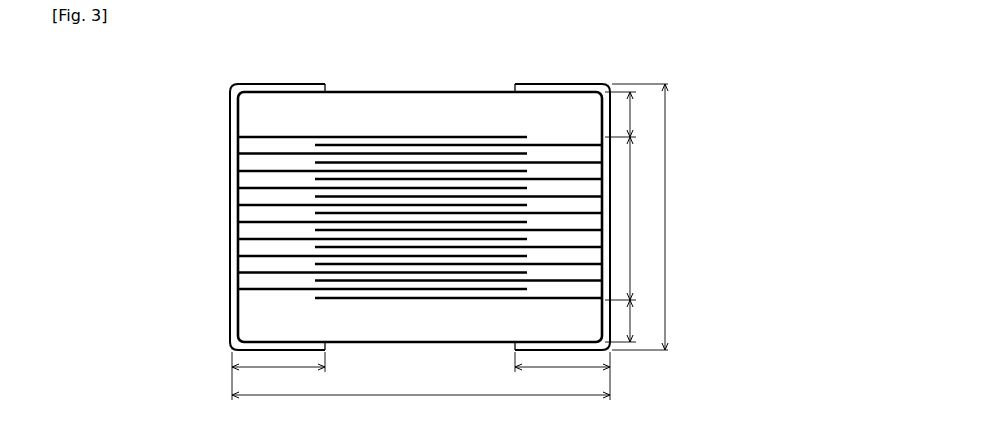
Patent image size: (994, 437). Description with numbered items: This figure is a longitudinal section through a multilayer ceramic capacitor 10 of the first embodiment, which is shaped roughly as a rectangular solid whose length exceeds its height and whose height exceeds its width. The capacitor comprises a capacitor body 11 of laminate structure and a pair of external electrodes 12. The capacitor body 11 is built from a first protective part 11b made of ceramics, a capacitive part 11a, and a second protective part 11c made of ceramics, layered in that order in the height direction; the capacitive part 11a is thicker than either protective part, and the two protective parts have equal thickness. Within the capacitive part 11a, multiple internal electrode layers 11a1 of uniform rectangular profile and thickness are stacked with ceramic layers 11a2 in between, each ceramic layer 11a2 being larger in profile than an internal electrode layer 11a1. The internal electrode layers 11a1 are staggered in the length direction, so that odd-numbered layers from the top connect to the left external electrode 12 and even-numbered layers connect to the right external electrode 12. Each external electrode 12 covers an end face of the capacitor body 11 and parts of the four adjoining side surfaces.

The multilayer ceramic capacitor 10 is at (250, 80).
The capacitor body 11 is at (406, 91).
The external electrode 12 is at (283, 83).
The capacitive part 11a is at (226, 138).
The internal electrode layer 11a1 is at (373, 134).
The ceramic layer 11a2 is at (437, 134).
The first protective part 11b is at (226, 91).
The second protective part 11c is at (226, 301).